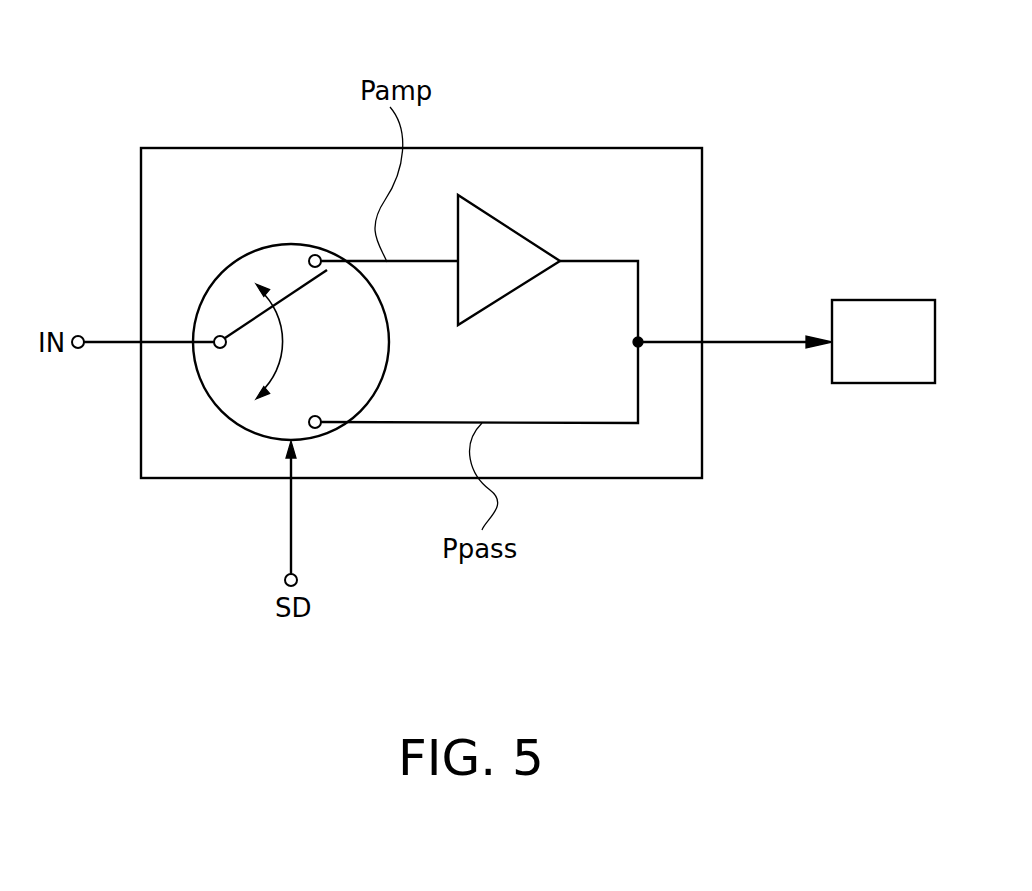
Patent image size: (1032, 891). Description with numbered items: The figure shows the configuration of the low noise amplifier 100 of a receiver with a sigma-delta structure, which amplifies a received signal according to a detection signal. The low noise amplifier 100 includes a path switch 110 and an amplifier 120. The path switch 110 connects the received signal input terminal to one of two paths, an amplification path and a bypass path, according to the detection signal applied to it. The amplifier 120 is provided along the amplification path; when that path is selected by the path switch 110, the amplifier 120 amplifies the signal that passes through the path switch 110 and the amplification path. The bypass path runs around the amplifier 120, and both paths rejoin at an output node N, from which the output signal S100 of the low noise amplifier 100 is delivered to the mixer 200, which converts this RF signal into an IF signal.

The low noise amplifier 100 is at (211, 148).
The path switch 110 is at (225, 270).
The amplifier 120 is at (510, 228).
The mixer 200 is at (883, 341).
The output node N is at (643, 346).
The output signal S100 is at (737, 327).